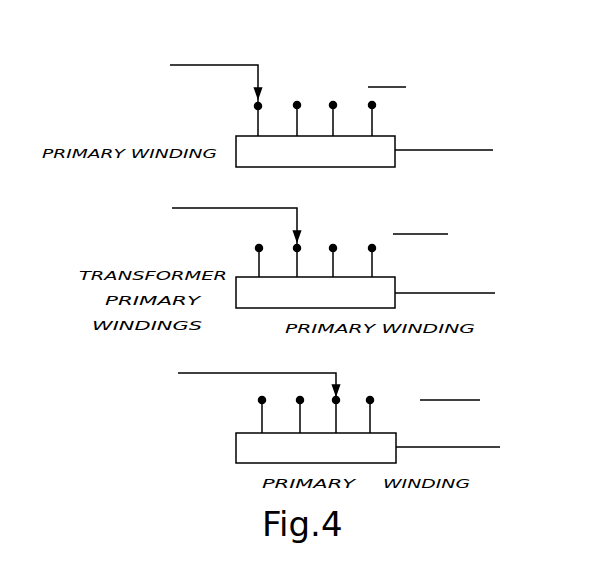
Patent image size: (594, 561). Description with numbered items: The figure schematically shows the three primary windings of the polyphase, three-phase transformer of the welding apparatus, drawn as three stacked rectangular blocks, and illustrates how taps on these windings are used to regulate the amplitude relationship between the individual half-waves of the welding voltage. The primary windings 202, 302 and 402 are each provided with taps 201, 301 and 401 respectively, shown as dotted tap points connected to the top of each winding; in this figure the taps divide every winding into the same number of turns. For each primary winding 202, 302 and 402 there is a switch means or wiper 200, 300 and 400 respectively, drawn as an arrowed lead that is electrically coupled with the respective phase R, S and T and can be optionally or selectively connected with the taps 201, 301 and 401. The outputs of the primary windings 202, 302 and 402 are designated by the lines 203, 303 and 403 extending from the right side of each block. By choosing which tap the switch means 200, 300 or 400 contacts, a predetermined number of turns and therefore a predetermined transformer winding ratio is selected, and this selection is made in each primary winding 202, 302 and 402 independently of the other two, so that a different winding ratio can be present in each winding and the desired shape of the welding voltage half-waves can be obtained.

The switch means or wiper 200 is at (228, 94).
The taps 201 is at (370, 102).
The primary winding 202 is at (315, 152).
The output of the primary winding 203 is at (467, 153).
The switch means or wiper 300 is at (247, 233).
The taps 301 is at (294, 246).
The primary winding 302 is at (315, 293).
The output of the primary winding 303 is at (467, 296).
The switch means or wiper 400 is at (268, 396).
The taps 401 is at (298, 398).
The primary winding 402 is at (316, 448).
The output of the primary winding 403 is at (469, 451).